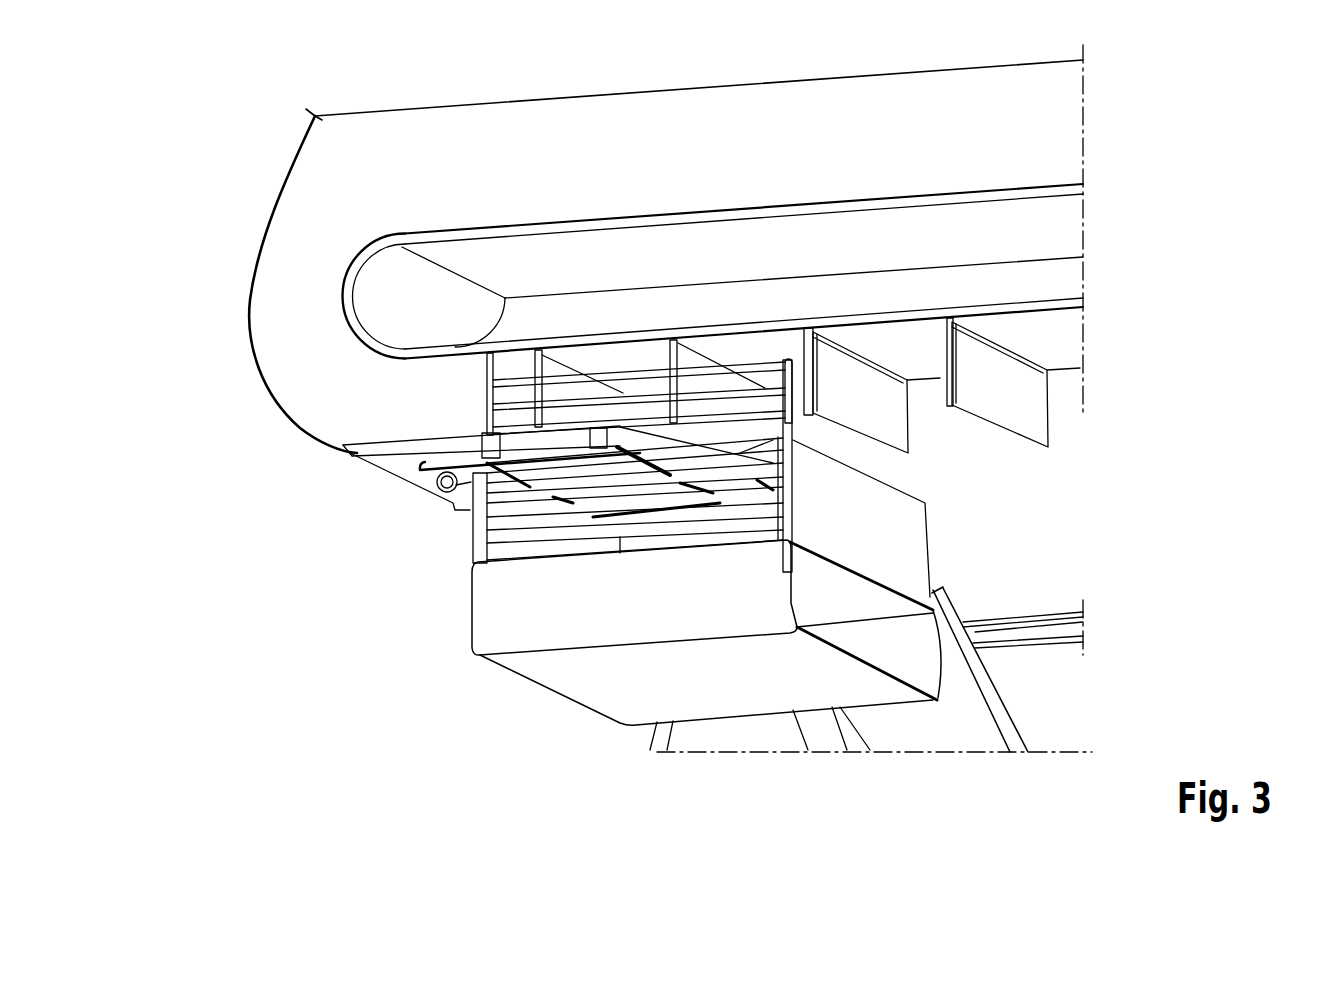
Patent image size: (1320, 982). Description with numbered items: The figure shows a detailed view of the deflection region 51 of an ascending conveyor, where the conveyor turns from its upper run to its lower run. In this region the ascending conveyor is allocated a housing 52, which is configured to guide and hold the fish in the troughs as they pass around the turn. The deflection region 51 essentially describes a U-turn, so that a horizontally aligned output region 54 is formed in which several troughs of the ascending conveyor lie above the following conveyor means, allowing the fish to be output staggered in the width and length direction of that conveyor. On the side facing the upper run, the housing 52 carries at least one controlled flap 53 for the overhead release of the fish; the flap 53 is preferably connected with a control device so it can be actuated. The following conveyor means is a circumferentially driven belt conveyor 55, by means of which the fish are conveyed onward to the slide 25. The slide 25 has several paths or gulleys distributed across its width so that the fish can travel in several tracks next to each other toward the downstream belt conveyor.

The slide 25 is at (980, 725).
The deflection region 51 is at (247, 429).
The housing 52 is at (272, 358).
The controlled flap 53 is at (567, 473).
The output region 54 is at (780, 490).
The belt conveyor 55 is at (867, 603).